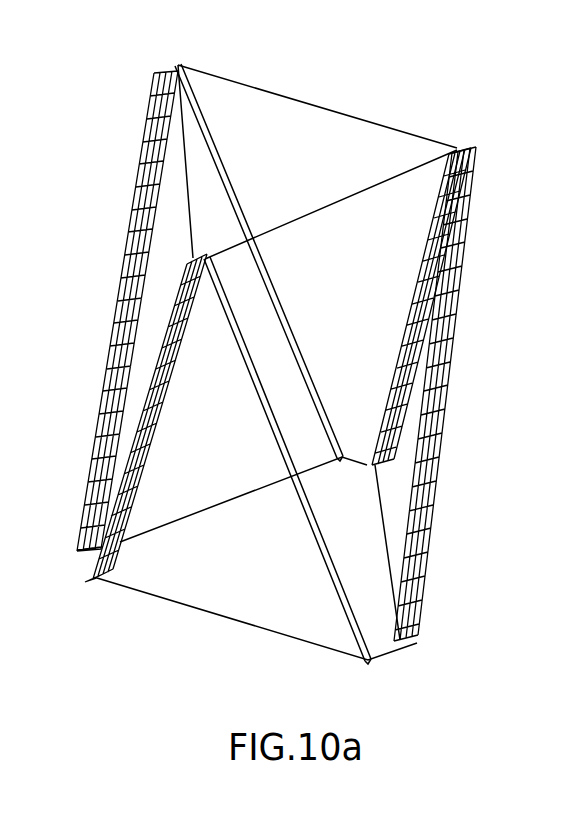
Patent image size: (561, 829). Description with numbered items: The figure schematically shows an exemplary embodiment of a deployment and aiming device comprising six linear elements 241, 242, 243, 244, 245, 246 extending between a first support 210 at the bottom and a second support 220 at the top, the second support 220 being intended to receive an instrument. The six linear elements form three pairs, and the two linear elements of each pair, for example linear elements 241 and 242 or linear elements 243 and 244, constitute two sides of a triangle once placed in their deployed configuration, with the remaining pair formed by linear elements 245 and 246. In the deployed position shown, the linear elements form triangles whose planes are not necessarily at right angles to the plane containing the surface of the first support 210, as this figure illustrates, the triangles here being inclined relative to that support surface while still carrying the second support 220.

The first support 210 is at (167, 597).
The second support 220 is at (340, 108).
The linear element 241 is at (183, 340).
The linear element 242 is at (300, 502).
The linear element 243 is at (447, 412).
The linear element 244 is at (403, 332).
The linear element 245 is at (242, 210).
The linear element 246 is at (132, 210).